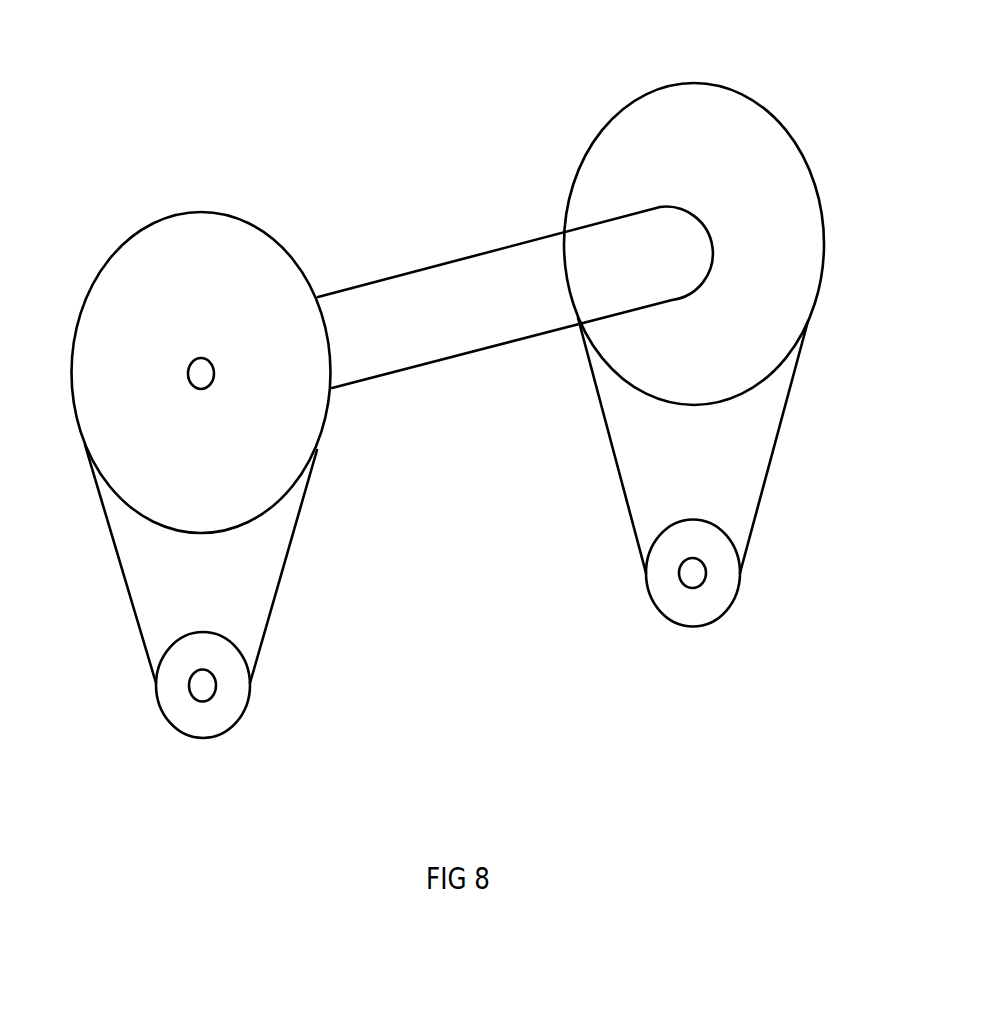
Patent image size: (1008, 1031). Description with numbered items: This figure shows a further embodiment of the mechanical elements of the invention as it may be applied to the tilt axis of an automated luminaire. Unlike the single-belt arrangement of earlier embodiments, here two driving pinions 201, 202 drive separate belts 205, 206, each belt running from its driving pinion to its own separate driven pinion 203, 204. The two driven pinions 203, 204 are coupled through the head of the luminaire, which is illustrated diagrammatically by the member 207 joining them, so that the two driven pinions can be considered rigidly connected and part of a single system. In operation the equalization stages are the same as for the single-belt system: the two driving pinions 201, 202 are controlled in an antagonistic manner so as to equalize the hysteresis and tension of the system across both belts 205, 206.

The driving pinion 201 is at (227, 717).
The driving pinion 202 is at (722, 603).
The driven pinion 203 is at (122, 270).
The driven pinion 204 is at (640, 127).
The belt 205 is at (293, 575).
The belt 206 is at (805, 416).
The member 207 is at (467, 270).